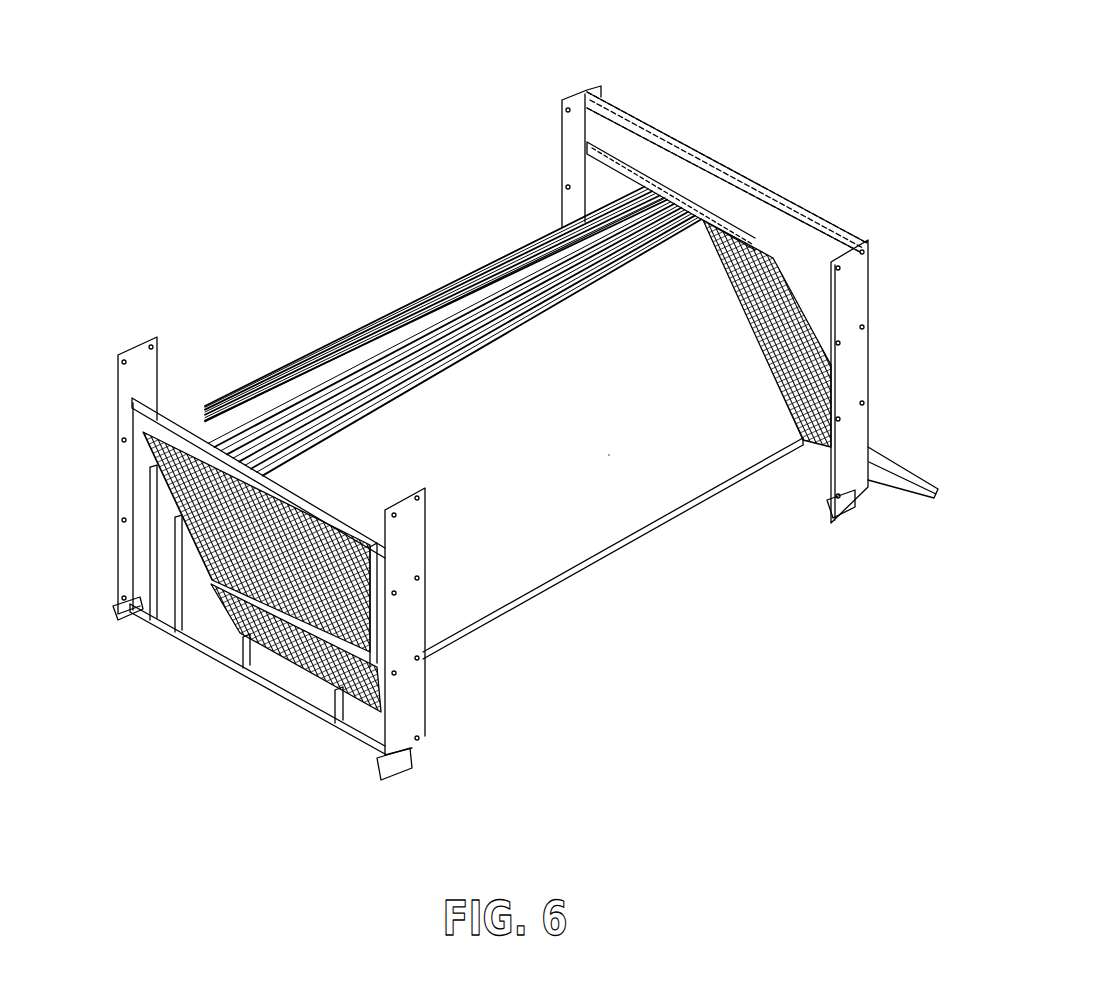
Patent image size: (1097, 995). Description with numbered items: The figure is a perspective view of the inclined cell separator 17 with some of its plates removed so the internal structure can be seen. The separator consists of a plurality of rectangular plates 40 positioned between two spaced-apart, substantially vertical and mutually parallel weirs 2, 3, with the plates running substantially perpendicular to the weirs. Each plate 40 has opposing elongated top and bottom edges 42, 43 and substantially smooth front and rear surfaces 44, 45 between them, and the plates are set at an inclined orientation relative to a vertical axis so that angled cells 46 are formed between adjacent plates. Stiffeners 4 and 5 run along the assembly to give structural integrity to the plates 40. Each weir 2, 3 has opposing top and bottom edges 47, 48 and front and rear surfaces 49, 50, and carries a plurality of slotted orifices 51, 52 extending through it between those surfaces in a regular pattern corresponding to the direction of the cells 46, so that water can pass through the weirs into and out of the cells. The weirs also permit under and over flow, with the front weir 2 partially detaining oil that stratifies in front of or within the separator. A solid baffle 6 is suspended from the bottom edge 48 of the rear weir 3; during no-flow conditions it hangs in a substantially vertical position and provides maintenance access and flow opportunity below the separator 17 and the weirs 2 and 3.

The inclined cell separator 17 is at (328, 149).
The weir 2 is at (228, 637).
The weir 3 is at (660, 157).
The stiffener 4 is at (710, 220).
The stiffener 5 is at (800, 443).
The solid baffle 6 is at (887, 470).
The rectangular plates 40 is at (610, 453).
The top edge 42 is at (538, 243).
The bottom edge 43 is at (508, 608).
The front surface 44 is at (302, 462).
The rear surface 45 is at (275, 364).
The angled cells 46 is at (375, 325).
The top edge 47 is at (166, 427).
The bottom edge 48 is at (313, 708).
The front surface 49 is at (203, 607).
The rear surface 50 is at (416, 440).
The orifices 51 is at (183, 503).
The orifices 52 is at (783, 337).